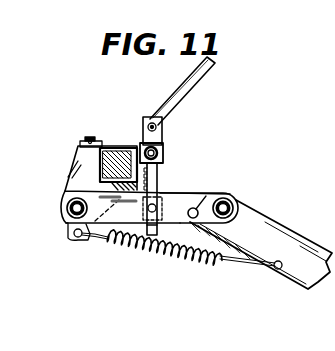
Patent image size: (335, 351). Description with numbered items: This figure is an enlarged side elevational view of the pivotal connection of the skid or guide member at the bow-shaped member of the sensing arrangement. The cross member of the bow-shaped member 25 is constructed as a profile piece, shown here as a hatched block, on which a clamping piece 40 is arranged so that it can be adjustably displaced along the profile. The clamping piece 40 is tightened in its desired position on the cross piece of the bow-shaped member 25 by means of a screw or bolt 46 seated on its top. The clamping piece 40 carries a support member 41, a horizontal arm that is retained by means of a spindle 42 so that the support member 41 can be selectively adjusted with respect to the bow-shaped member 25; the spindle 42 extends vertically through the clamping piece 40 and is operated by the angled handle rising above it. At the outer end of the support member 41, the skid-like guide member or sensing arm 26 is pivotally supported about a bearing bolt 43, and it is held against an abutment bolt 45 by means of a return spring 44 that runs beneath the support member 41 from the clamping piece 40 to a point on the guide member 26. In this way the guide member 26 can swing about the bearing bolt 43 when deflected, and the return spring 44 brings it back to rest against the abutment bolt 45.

The clamping piece 40 is at (72, 178).
The screw or bolt 46 is at (88, 140).
The bow-shaped member 25 is at (129, 148).
The spindle 42 is at (162, 127).
The support member 41 is at (171, 196).
The bearing bolt 43 is at (240, 204).
The abutment bolt 45 is at (206, 196).
The skid-like guide member or sensing arm 26 is at (293, 237).
The return spring 44 is at (118, 246).